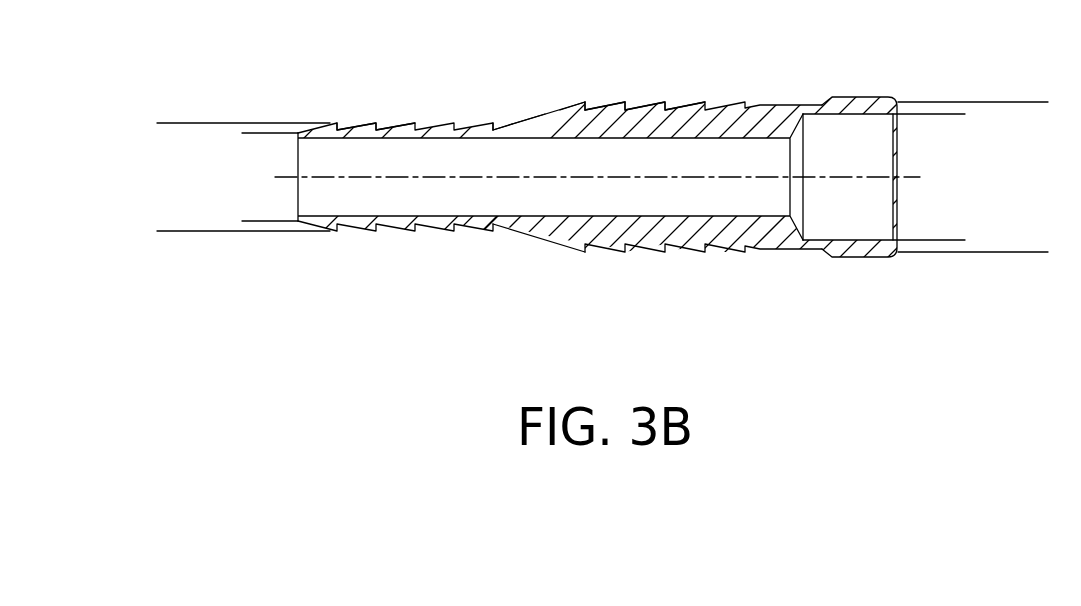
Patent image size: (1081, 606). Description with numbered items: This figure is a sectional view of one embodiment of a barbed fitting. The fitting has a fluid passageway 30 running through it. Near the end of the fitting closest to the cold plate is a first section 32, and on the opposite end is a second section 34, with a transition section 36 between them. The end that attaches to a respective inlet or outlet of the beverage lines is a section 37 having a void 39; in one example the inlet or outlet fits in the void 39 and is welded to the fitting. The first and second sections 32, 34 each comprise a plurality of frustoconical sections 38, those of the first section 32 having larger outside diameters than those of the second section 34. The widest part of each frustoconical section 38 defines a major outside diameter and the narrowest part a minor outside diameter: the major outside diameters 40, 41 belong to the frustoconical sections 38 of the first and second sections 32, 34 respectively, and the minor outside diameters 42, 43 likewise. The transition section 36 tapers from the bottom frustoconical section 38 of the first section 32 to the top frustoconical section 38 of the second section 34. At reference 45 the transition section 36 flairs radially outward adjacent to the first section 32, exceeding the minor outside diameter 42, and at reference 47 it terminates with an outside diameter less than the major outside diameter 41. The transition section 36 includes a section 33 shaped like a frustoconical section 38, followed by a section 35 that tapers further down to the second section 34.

The fluid passageway 30 is at (404, 173).
The first section 32 is at (588, 263).
The section 33 is at (568, 103).
The second section 34 is at (297, 253).
The section 35 is at (521, 118).
The transition section 36 is at (497, 263).
The section 37 is at (890, 97).
The frustoconical sections 38 is at (318, 122).
The void 39 is at (826, 163).
The major outside diameter 40 is at (1040, 102).
The major outside diameter 41 is at (164, 123).
The minor outside diameter 42 is at (957, 114).
The minor outside diameter 43 is at (250, 133).
The radially outward flair 45 is at (600, 103).
The termination of transition section 47 is at (503, 122).